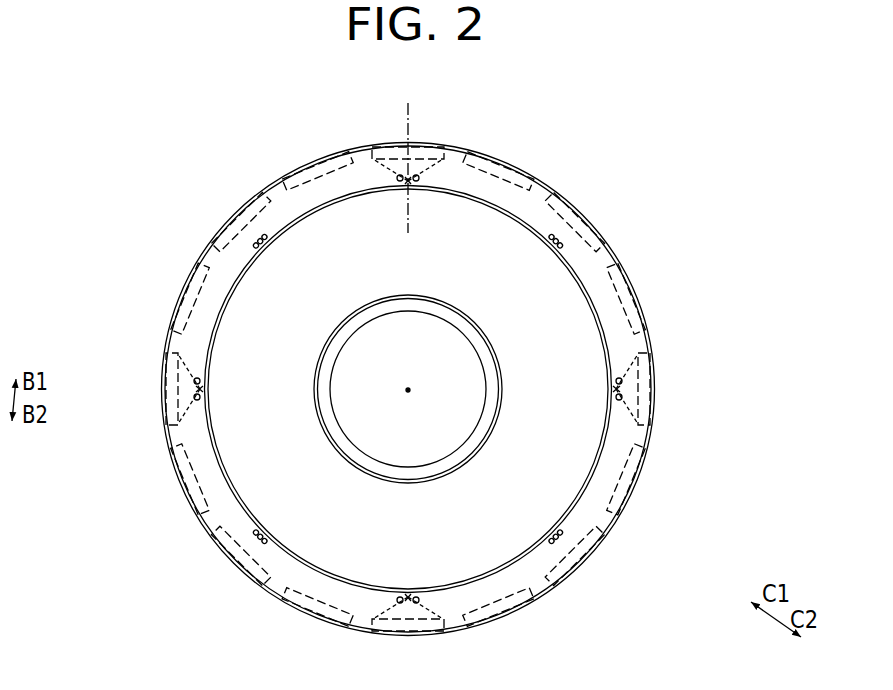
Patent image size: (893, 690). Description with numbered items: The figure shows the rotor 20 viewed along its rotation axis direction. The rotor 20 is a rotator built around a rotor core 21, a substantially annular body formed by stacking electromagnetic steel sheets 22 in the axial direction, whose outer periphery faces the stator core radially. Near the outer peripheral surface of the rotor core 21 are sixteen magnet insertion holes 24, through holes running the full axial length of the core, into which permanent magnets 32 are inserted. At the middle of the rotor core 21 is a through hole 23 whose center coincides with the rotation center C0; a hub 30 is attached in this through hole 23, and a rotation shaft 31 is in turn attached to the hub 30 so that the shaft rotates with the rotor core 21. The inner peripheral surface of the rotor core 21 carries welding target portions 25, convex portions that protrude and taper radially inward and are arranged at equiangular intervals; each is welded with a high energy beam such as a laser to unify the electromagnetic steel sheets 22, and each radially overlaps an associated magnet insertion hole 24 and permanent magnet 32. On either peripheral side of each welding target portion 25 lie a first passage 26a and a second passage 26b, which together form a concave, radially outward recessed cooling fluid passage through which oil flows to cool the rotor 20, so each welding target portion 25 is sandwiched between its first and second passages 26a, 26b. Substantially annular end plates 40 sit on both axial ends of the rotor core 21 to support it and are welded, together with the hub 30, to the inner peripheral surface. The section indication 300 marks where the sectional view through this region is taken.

The rotor 20 is at (644, 157).
The rotor core 21 is at (506, 156).
The electromagnetic steel sheets 22 is at (611, 237).
The through hole 23 is at (596, 306).
The magnet insertion holes 24 is at (643, 370).
The welding target portions 25 is at (407, 179).
The first passage 26a is at (418, 178).
The second passage 26b is at (400, 180).
The hub 30 is at (577, 450).
The rotation shaft 31 is at (457, 432).
The permanent magnets 32 is at (657, 400).
The end plates 40 is at (538, 192).
The section line 300 is at (458, 110).
The rotation center C0 is at (410, 389).